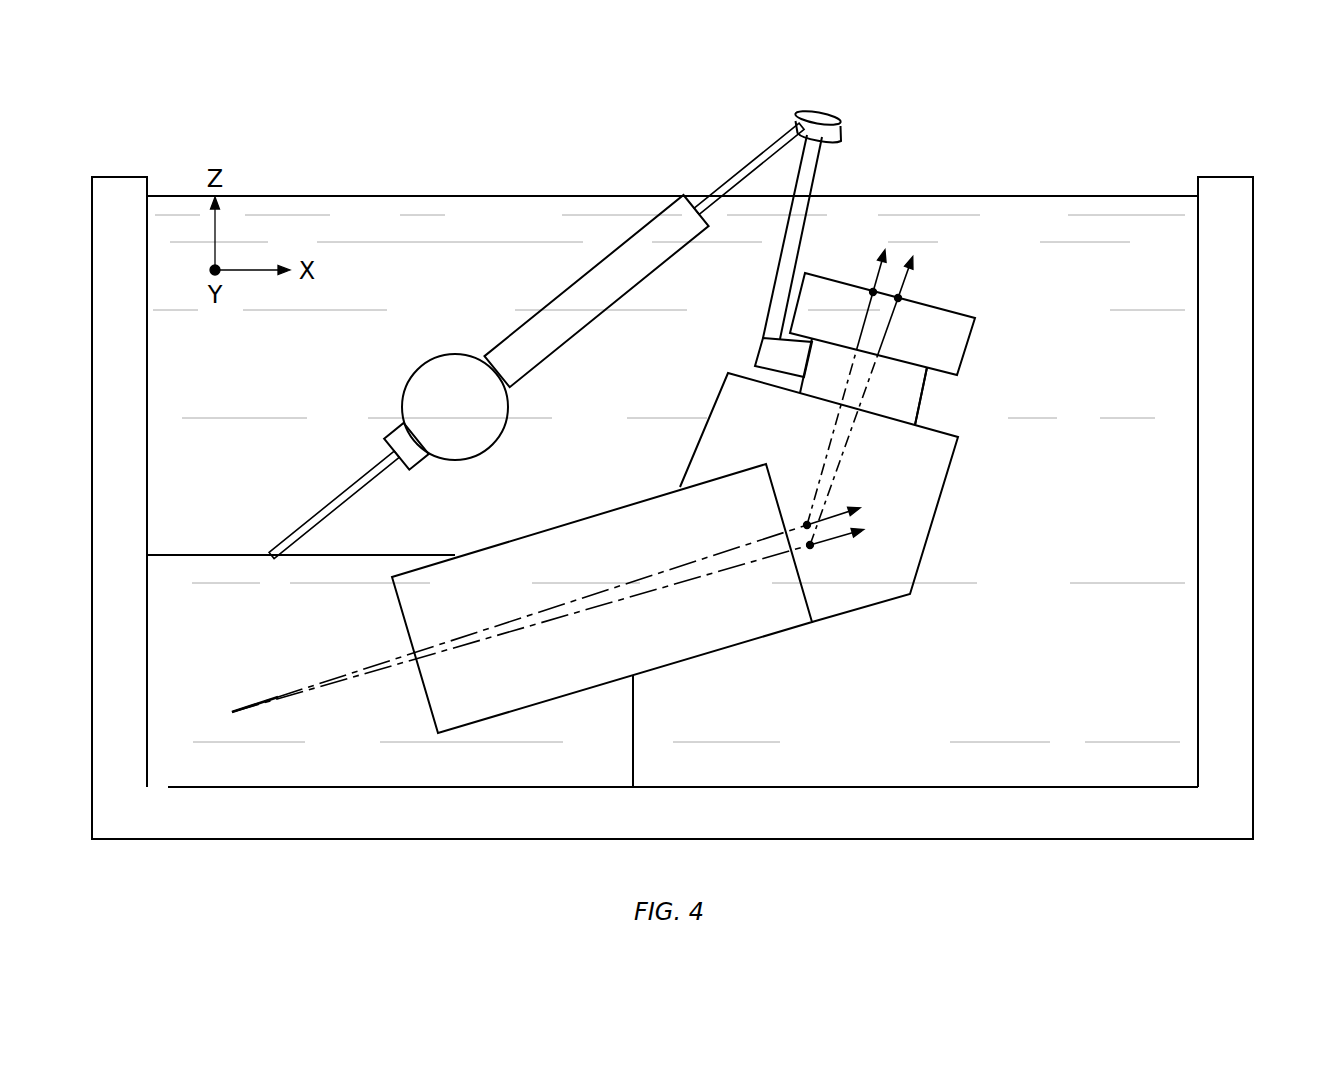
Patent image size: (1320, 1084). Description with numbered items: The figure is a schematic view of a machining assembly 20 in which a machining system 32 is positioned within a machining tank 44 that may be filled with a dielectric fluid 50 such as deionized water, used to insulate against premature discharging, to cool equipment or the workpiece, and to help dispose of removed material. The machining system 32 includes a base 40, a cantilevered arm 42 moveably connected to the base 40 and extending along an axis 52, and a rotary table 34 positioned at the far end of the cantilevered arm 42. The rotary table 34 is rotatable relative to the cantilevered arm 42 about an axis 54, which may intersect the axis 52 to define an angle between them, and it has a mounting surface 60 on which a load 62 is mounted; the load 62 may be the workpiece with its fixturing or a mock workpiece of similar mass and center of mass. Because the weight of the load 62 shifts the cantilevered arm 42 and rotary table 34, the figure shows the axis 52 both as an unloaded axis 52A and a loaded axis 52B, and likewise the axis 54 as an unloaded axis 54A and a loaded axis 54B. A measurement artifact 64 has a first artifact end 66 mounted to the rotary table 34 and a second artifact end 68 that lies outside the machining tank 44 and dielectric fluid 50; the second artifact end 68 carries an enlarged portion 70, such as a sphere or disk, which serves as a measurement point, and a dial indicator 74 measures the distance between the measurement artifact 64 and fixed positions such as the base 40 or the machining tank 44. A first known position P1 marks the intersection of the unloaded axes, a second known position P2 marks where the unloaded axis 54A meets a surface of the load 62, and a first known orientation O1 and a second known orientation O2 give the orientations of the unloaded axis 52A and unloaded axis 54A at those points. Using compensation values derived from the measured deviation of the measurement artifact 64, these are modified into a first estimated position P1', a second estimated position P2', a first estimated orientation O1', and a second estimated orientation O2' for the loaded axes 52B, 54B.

The machining assembly 20 is at (692, 409).
The machining tank 44 is at (1227, 240).
The base 40 is at (194, 572).
The machining system 32 is at (282, 518).
The dial indicator 74 is at (505, 345).
The dielectric fluid 50 is at (621, 371).
The second artifact end 68 is at (830, 101).
The enlarged portion 70 is at (797, 110).
The measurement artifact 64 is at (826, 171).
The first artifact end 66 is at (800, 357).
The load 62 is at (952, 328).
The mounting surface 60 is at (913, 360).
The rotary table 34 is at (912, 398).
The axis 54 is at (920, 500).
The unloaded axis 54A is at (832, 432).
The loaded axis 54B is at (857, 445).
The cantilevered arm 42 is at (670, 645).
The axis 52 is at (613, 625).
The unloaded axis 52A is at (705, 548).
The loaded axis 52B is at (740, 600).
The first known position P1 is at (759, 521).
The first estimated position P1' is at (846, 599).
The second known position P2 is at (847, 263).
The second estimated position P2' is at (944, 293).
The first known orientation O1 is at (820, 488).
The first estimated orientation O1' is at (861, 552).
The second known orientation O2 is at (860, 245).
The second estimated orientation O2' is at (947, 271).